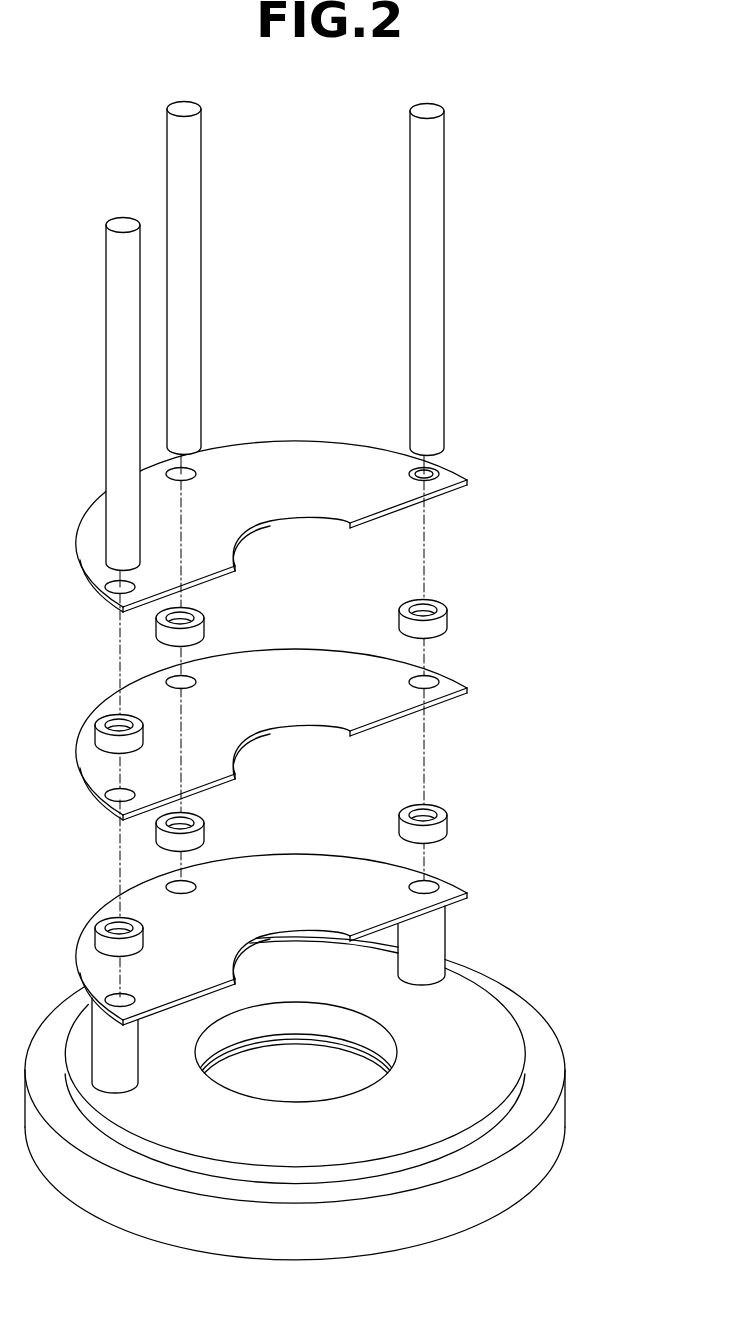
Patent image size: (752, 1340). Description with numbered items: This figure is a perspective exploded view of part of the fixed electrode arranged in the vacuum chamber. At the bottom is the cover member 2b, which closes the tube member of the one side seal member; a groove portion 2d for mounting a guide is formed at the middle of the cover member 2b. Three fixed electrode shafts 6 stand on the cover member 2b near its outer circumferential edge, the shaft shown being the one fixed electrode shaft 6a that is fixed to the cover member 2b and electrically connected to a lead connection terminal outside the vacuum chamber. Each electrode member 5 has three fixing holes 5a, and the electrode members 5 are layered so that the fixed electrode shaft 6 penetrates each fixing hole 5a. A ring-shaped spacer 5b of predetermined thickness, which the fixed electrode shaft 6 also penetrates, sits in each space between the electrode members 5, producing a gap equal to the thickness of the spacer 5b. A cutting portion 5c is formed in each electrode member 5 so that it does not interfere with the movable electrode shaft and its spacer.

The cover member 2b is at (468, 1003).
The groove portion 2d is at (337, 1078).
The electrode member 5 is at (305, 719).
The fixing hole 5a is at (433, 470).
The spacer 5b is at (443, 830).
The cutting portion 5c is at (287, 548).
The fixed electrode shaft 6 is at (332, 336).
The fixed electrode shaft 6a is at (443, 222).